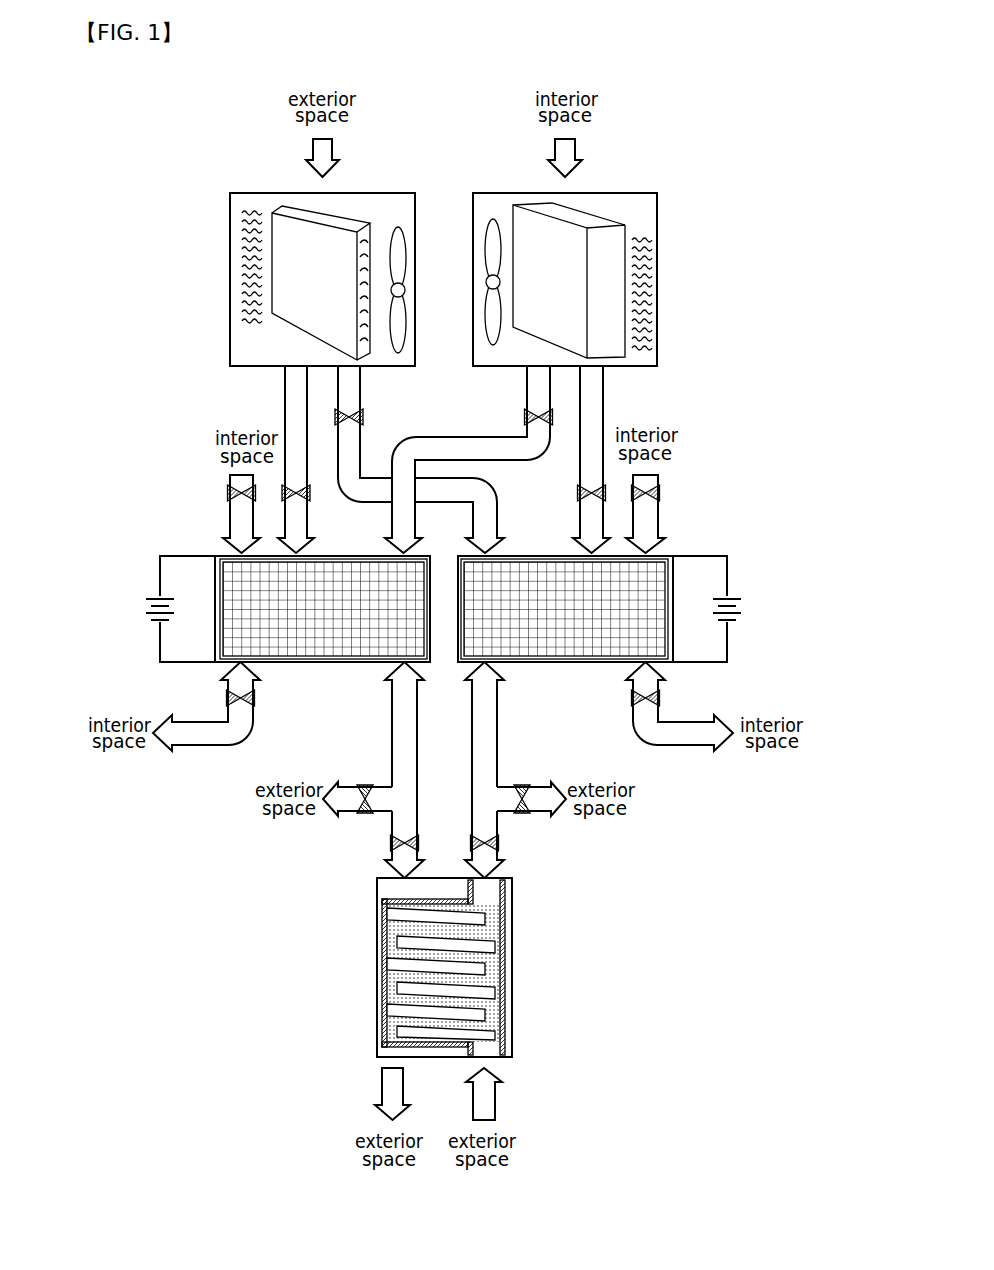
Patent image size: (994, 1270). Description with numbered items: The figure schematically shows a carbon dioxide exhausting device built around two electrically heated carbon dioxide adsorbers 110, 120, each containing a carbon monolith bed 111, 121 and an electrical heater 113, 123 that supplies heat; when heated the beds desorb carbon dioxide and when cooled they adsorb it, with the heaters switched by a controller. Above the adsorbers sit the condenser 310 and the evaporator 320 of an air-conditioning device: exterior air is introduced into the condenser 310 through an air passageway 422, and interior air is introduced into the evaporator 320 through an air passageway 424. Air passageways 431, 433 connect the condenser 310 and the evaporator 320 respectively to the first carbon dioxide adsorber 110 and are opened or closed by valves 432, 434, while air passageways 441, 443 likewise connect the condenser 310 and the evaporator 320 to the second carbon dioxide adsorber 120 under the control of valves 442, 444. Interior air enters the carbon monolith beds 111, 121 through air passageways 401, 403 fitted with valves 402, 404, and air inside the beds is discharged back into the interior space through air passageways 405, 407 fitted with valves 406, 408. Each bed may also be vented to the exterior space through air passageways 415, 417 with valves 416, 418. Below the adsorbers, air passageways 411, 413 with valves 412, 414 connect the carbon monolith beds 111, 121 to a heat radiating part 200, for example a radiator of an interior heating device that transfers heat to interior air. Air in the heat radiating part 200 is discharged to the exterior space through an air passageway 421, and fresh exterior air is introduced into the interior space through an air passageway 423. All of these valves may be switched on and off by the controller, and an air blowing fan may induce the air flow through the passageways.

The carbon dioxide adsorber 110 is at (253, 561).
The carbon monolith bed 111 is at (220, 558).
The electrical heater 113 is at (130, 576).
The carbon dioxide adsorber 120 is at (635, 560).
The carbon monolith bed 121 is at (668, 556).
The electrical heater 123 is at (733, 597).
The heat radiating part 200 is at (517, 955).
The condenser 310 is at (278, 218).
The evaporator 320 is at (585, 220).
The air passageway 401 is at (235, 518).
The valve 402 is at (228, 490).
The air passageway 403 is at (653, 518).
The valve 404 is at (660, 490).
The air passageway 405 is at (193, 738).
The valve 406 is at (228, 698).
The air passageway 407 is at (693, 738).
The valve 408 is at (658, 698).
The air passageway 411 is at (400, 695).
The valve 412 is at (385, 845).
The air passageway 413 is at (492, 693).
The valve 414 is at (497, 845).
The air passageway 415 is at (332, 785).
The valve 416 is at (365, 786).
The air passageway 417 is at (555, 785).
The valve 418 is at (522, 786).
The air passageway 421 is at (382, 1092).
The air passageway 422 is at (316, 147).
The air passageway 423 is at (494, 1095).
The air passageway 424 is at (573, 143).
The air passageway 431 is at (288, 397).
The valve 432 is at (308, 497).
The air passageway 433 is at (482, 448).
The valve 434 is at (527, 420).
The air passageway 441 is at (353, 452).
The valve 442 is at (365, 420).
The air passageway 443 is at (600, 397).
The valve 444 is at (580, 492).